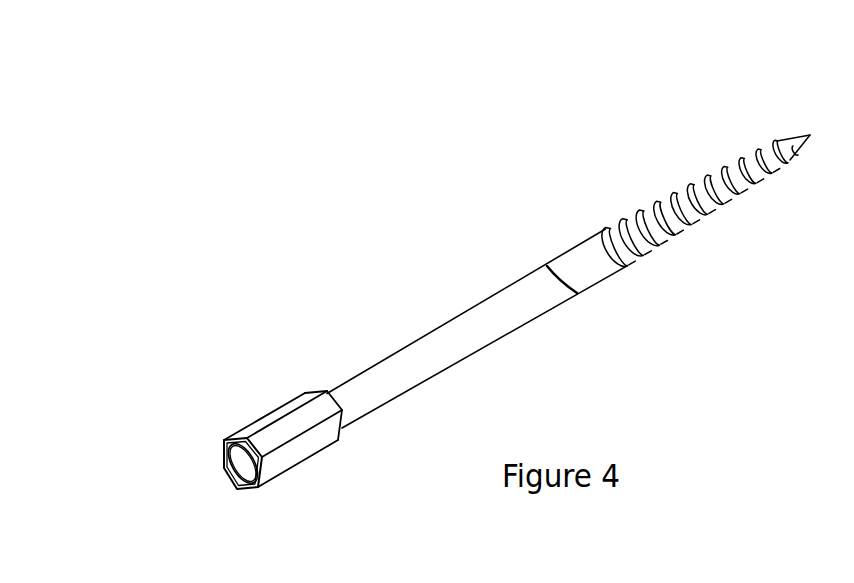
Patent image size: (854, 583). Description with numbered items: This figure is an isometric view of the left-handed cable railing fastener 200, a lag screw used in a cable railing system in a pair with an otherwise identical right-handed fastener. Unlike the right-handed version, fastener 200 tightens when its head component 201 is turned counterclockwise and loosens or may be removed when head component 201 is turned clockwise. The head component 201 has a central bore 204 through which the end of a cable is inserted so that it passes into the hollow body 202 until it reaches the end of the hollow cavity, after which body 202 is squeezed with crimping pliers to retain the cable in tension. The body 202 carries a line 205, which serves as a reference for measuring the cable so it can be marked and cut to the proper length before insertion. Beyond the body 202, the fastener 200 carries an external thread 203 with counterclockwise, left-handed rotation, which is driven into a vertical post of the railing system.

The left-handed fastener 200 is at (416, 288).
The head component 201 is at (275, 394).
The body 202 is at (467, 281).
The left-handed thread 203 is at (649, 179).
The central bore 204 is at (228, 467).
The line 205 is at (593, 294).